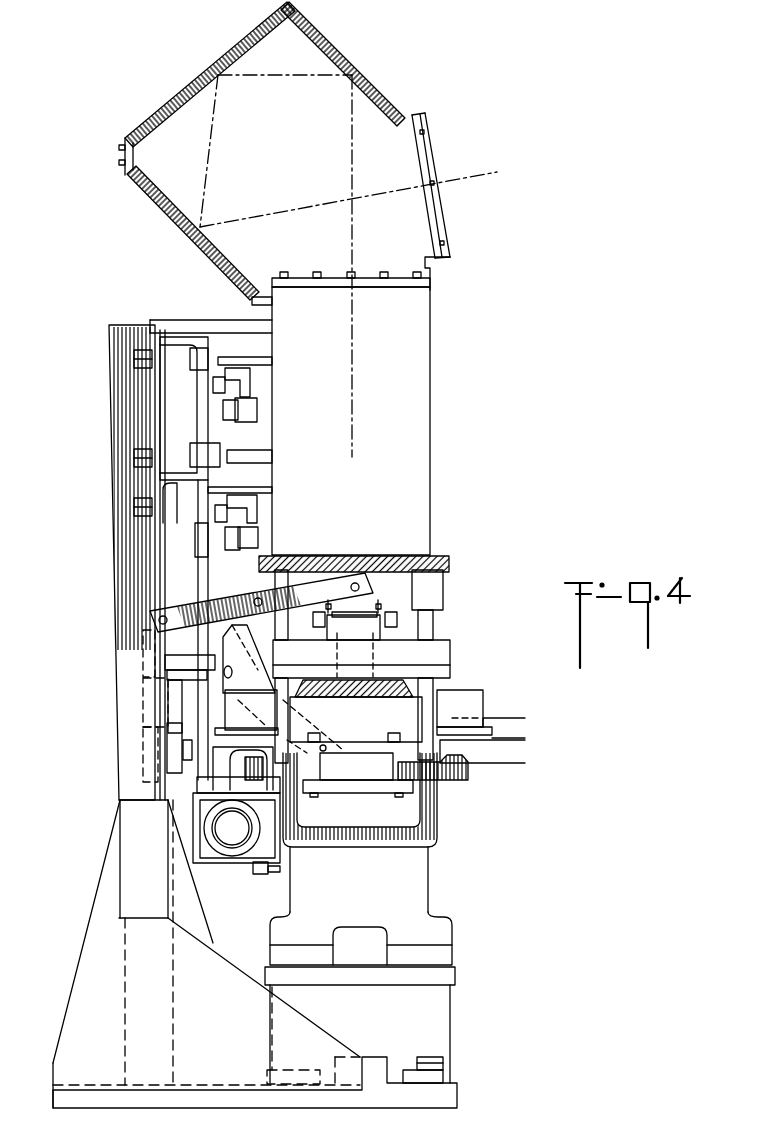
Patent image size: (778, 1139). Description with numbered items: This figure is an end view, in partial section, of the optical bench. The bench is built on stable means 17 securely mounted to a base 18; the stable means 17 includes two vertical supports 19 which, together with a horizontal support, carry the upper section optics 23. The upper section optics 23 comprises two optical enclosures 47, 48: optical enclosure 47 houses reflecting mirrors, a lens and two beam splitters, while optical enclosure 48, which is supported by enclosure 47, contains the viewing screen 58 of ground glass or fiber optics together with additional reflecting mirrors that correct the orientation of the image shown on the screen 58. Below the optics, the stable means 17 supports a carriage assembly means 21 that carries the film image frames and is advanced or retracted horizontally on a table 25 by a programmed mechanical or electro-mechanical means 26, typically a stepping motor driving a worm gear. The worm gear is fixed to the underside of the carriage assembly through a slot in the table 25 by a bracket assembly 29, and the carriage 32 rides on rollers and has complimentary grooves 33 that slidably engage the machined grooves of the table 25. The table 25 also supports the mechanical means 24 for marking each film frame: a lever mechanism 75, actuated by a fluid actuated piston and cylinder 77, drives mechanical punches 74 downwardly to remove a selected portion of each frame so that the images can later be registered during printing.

The stable means 17 is at (430, 862).
The base 18 is at (458, 1097).
The vertical supports 19 is at (125, 546).
The carriage assembly means 21 is at (474, 657).
The upper section optics 23 is at (389, 62).
The mechanical means 24 is at (433, 602).
The table 25 is at (442, 793).
The programmed mechanical or electro-mechanical means 26 is at (234, 878).
The bracket assembly 29 is at (200, 828).
The carriage 32 is at (432, 708).
The complimentary grooves 33 is at (468, 773).
The optical enclosure 47 is at (430, 420).
The optical enclosure 48 is at (200, 70).
The viewing screen 58 is at (427, 123).
The mechanical punches 74 is at (400, 603).
The lever mechanism 75 is at (237, 604).
The fluid actuated piston and cylinder 77 is at (143, 748).